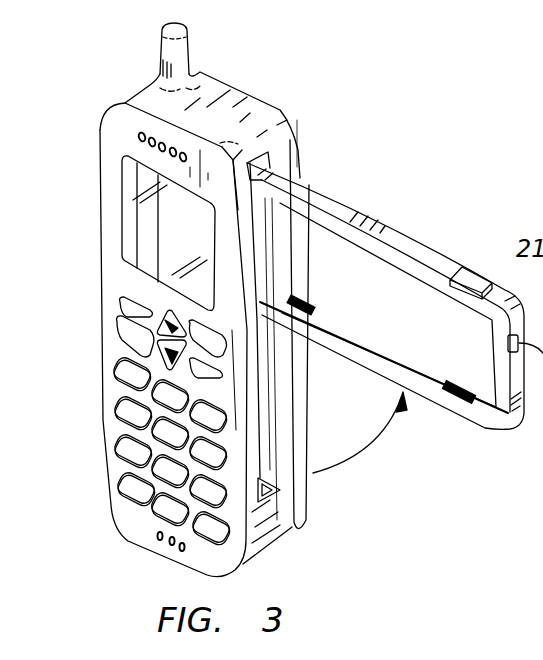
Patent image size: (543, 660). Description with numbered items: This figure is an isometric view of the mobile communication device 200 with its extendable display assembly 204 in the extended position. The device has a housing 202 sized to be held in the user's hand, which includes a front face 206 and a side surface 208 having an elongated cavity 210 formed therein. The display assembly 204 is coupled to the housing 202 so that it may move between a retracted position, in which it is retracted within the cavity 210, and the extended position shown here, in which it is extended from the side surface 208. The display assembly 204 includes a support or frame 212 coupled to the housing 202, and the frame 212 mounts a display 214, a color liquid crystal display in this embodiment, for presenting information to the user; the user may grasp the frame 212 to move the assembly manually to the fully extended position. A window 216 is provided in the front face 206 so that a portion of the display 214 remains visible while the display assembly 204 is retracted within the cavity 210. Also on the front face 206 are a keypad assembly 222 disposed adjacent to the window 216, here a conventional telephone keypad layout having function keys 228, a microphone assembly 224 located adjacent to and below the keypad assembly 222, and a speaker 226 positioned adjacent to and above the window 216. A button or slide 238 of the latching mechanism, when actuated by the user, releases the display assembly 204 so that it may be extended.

The mobile communication device 200 is at (286, 66).
The housing 202 is at (294, 178).
The extendable display assembly 204 is at (311, 150).
The front face 206 is at (110, 343).
The side surface 208 is at (300, 478).
The elongated cavity 210 is at (292, 484).
The frame 212 is at (336, 198).
The display 214 is at (402, 292).
The window 216 is at (143, 230).
The keypad assembly 222 is at (110, 428).
The microphone assembly 224 is at (169, 540).
The speaker 226 is at (141, 130).
The function keys 228 is at (117, 453).
The button or slide 238 is at (471, 282).